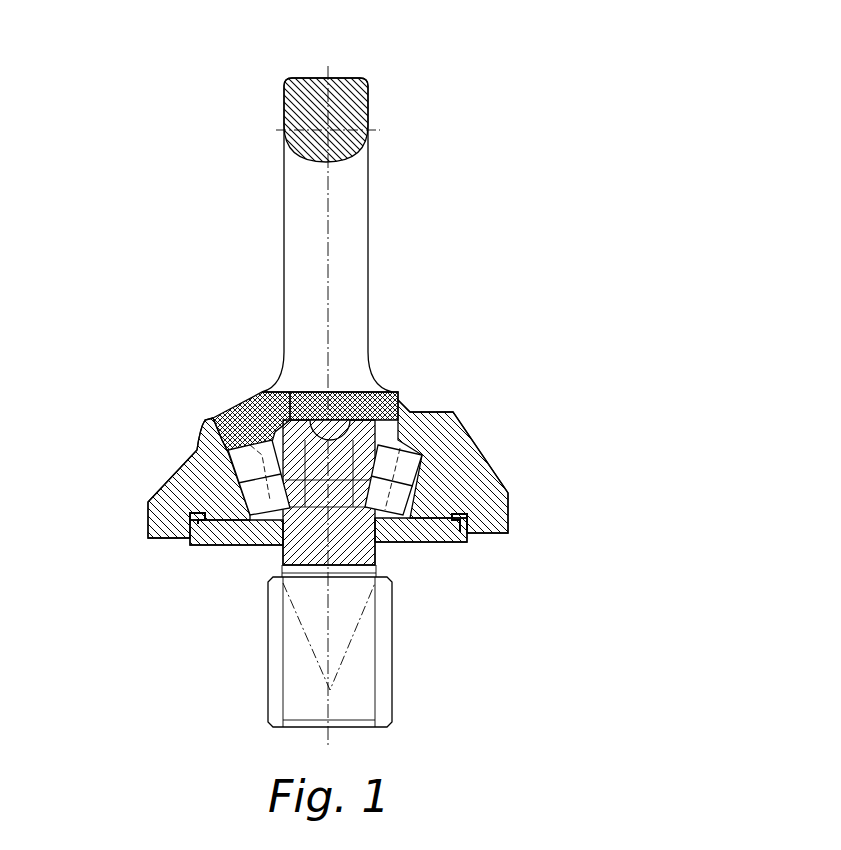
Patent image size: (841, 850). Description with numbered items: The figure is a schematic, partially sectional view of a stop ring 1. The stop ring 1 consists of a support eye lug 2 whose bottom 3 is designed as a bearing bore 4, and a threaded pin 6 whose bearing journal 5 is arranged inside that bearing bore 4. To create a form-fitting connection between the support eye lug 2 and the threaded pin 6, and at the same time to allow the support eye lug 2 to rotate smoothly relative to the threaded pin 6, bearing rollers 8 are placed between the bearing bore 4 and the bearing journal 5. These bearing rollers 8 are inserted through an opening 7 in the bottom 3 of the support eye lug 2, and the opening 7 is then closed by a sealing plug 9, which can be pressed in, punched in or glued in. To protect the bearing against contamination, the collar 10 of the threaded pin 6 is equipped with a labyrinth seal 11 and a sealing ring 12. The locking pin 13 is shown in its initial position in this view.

The stop ring 1 is at (323, 378).
The support eye lug 2 is at (355, 268).
The bottom 3 is at (467, 477).
The bearing bore 4 is at (395, 442).
The bearing journal 5 is at (372, 438).
The threaded pin 6 is at (370, 672).
The opening 7 is at (265, 413).
The bearing rollers 8 is at (243, 470).
The sealing plug 9 is at (230, 420).
The collar 10 is at (460, 540).
The labyrinth seal 11 is at (247, 527).
The sealing ring 12 is at (185, 540).
The locking pin 13 is at (337, 407).